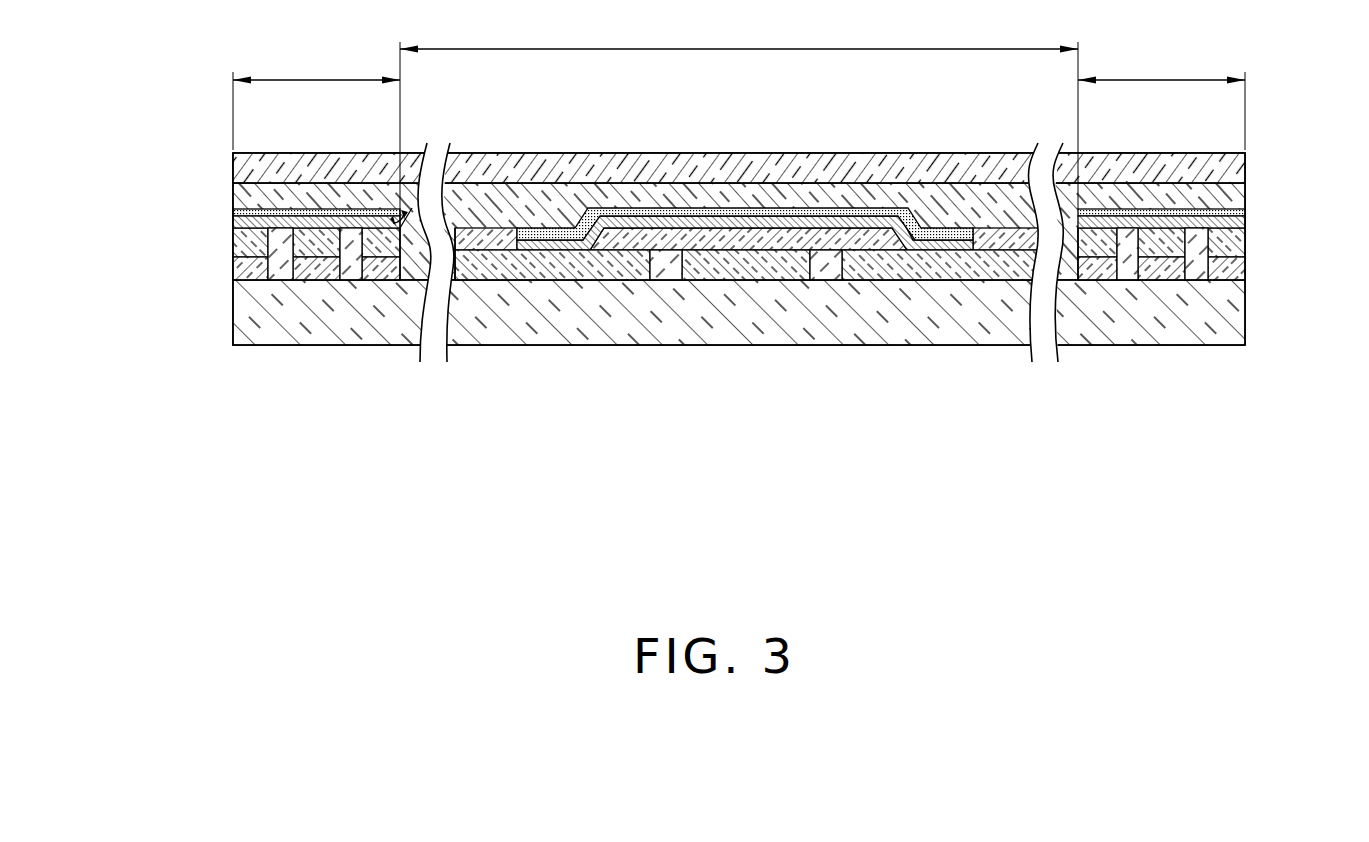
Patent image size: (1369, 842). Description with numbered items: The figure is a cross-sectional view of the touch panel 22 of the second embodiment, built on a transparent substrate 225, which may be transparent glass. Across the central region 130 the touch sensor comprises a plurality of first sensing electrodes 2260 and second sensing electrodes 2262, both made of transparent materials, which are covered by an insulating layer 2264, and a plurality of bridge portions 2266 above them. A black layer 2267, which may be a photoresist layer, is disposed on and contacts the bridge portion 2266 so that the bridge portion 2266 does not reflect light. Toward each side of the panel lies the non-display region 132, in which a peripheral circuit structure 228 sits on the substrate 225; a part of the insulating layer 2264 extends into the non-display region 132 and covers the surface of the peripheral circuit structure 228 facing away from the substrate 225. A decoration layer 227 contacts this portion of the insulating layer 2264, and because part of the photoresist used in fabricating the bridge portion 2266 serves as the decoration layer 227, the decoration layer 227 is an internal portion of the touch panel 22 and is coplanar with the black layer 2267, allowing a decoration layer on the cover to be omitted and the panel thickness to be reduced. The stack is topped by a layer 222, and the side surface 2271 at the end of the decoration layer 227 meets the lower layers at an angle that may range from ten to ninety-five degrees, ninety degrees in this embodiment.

The touch panel 22 is at (221, 95).
The insulating layer 222 is at (233, 197).
The decoration layer 227 is at (233, 212).
The substrate 225 is at (253, 307).
The peripheral circuit structure 228 is at (1242, 273).
The insulating layer 2264 is at (280, 282).
The inclined edge of conductive layer 2271 is at (432, 262).
The bridge portion 2266 is at (548, 245).
The first sensing electrodes 2260 is at (625, 267).
The second sensing electrodes 2262 is at (755, 272).
The black layer 2267 is at (785, 210).
The display region 130 is at (739, 32).
The non-display region 132 is at (739, 135).